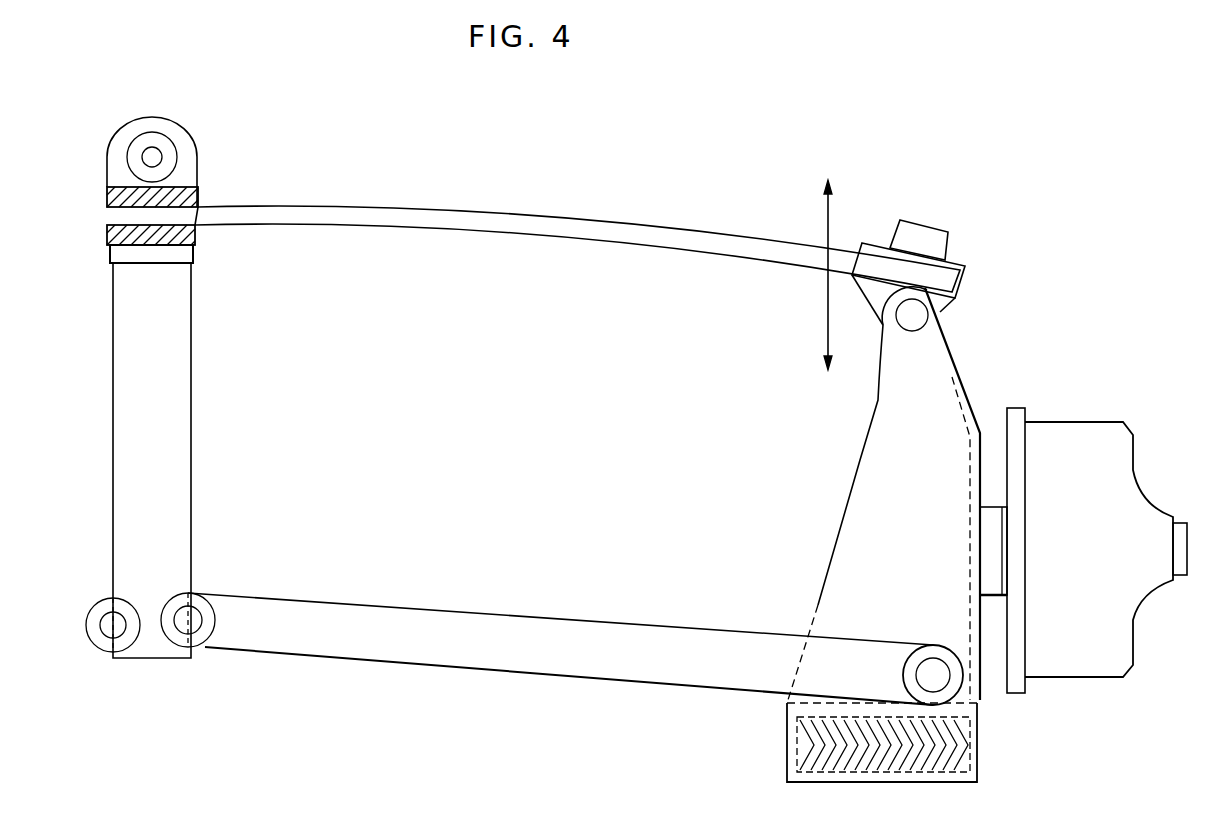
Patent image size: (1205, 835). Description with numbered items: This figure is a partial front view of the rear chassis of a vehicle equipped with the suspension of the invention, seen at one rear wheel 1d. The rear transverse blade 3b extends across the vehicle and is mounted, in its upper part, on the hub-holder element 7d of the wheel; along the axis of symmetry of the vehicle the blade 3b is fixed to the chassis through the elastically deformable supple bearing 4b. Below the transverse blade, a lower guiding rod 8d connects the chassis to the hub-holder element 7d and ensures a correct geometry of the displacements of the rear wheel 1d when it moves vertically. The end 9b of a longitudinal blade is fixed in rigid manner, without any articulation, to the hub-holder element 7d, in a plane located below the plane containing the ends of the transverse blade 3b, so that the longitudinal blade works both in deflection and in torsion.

The supple bearing 4b is at (192, 182).
The transverse blade 3b is at (440, 207).
The hub-holder element 7d is at (878, 245).
The wheel 1d is at (1069, 386).
The lower guiding rod 8d is at (460, 625).
The end of longitudinal blade 9b is at (800, 755).